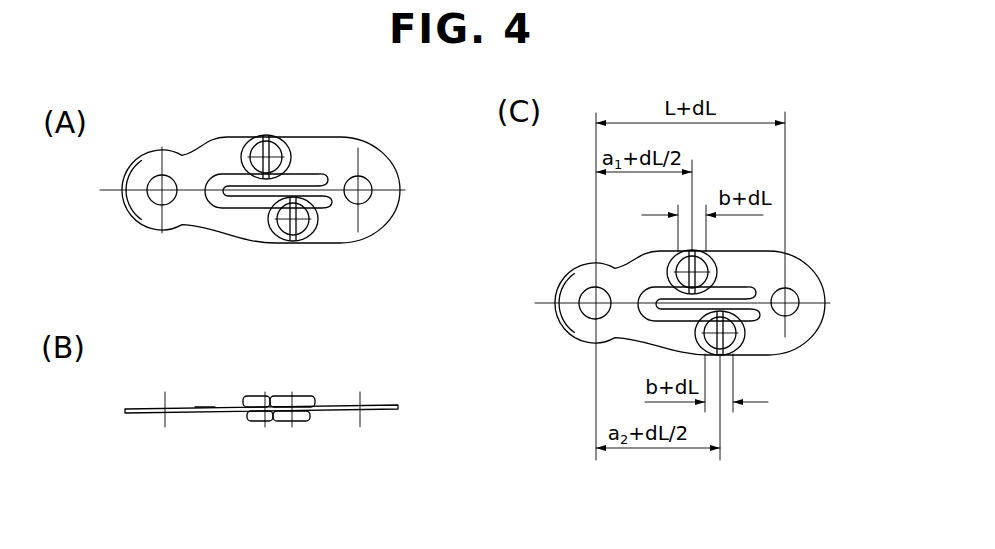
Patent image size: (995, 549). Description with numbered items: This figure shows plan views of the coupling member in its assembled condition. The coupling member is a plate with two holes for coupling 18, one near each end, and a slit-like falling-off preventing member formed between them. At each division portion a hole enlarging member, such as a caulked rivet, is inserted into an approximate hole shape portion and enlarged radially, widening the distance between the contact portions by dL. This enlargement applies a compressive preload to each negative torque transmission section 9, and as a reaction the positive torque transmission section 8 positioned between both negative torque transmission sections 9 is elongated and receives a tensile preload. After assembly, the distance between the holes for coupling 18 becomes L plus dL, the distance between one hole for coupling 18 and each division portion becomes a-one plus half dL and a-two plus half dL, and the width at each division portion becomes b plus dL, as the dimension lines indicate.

The positive torque transmission section 8 is at (714, 288).
The negative torque transmission section 9 is at (748, 337).
The hole for coupling 18 is at (588, 296).